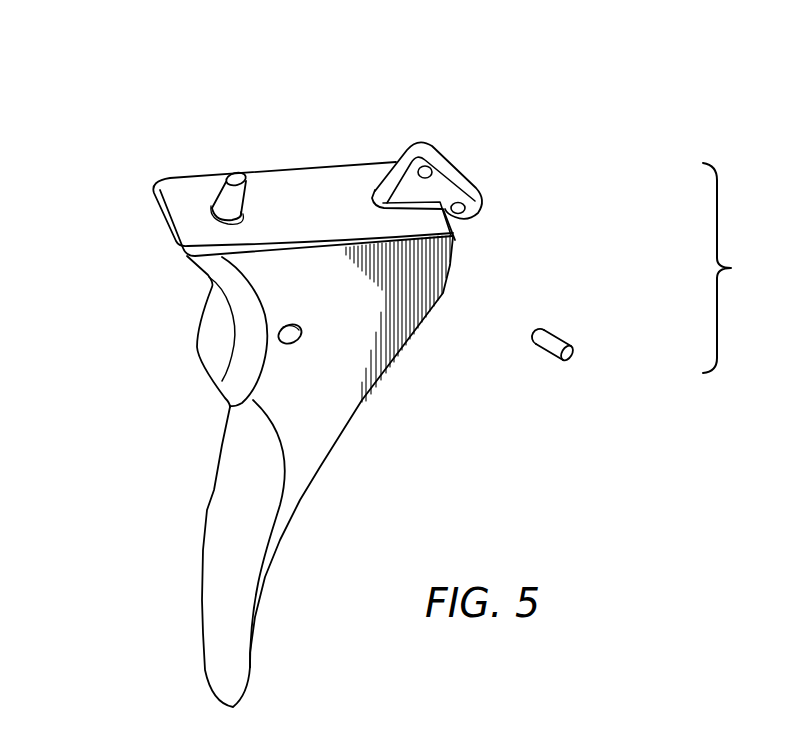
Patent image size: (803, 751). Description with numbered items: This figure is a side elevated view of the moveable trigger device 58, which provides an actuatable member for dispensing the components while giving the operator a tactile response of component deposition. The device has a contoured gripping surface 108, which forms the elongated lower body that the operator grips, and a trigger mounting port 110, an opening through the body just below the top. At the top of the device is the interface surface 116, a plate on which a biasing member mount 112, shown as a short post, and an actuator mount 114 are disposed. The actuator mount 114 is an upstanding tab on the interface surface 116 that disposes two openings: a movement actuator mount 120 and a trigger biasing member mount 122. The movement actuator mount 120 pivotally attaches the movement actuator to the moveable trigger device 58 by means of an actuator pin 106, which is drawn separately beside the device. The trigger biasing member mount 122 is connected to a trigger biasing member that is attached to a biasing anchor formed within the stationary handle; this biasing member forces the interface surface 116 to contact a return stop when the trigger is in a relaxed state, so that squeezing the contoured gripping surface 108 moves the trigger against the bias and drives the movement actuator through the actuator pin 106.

The moveable trigger device 58 is at (105, 97).
The actuator pin 106 is at (572, 360).
The contoured gripping surface 108 is at (210, 509).
The trigger mounting port 110 is at (280, 331).
The biasing member mount 112 is at (236, 174).
The actuator mount 114 is at (469, 169).
The interface surface 116 is at (313, 182).
The movement actuator mount 120 is at (427, 165).
The trigger biasing member mount 122 is at (462, 211).